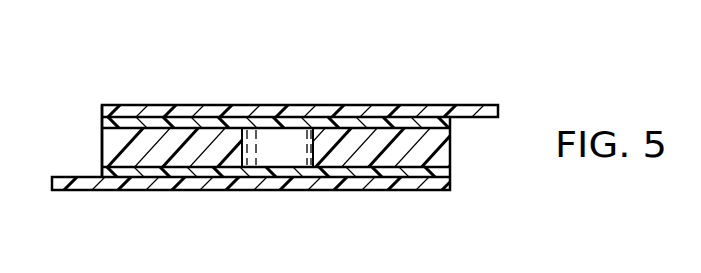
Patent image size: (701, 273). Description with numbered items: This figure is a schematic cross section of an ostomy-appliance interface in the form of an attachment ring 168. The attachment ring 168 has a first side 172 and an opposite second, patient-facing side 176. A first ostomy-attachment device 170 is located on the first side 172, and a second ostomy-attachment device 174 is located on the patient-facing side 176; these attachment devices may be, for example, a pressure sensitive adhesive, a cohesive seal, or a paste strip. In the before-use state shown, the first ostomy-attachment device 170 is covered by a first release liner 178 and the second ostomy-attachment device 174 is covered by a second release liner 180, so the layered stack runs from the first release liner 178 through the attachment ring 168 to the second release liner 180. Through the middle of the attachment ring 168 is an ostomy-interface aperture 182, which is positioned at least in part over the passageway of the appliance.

The attachment ring 168 is at (451, 148).
The first ostomy-attachment device 170 is at (101, 122).
The first side 172 is at (153, 123).
The second ostomy-attachment device 174 is at (451, 172).
The second, patient-facing side 176 is at (413, 169).
The first release liner 178 is at (383, 105).
The second release liner 180 is at (136, 191).
The ostomy-interface aperture 182 is at (253, 143).